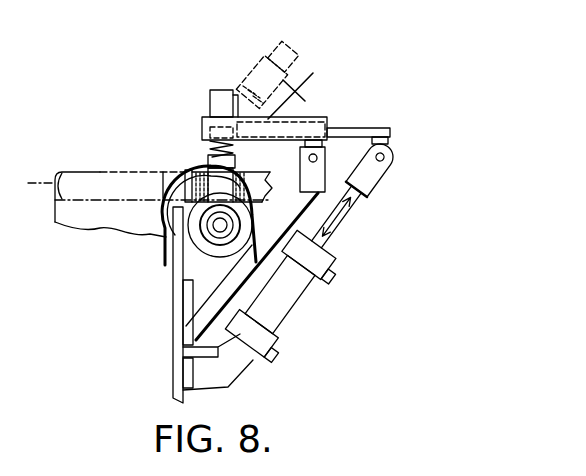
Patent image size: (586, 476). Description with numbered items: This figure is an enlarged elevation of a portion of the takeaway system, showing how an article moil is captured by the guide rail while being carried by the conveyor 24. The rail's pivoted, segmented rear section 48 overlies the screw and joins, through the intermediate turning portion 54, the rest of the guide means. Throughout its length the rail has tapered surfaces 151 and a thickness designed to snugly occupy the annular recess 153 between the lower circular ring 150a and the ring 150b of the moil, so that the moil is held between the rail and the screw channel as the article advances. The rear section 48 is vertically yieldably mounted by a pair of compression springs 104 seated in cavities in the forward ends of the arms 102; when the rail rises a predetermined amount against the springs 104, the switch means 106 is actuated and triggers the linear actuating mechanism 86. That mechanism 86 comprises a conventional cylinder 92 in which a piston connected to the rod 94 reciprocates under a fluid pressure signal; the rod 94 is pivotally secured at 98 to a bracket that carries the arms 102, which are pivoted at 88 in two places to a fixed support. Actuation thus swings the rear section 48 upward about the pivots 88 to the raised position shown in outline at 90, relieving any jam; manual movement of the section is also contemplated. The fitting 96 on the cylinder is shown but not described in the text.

The conveyor 24 is at (58, 166).
The intermediate turning portion 54 is at (153, 211).
The annular recess 153 is at (212, 230).
The compression springs 104 is at (240, 87).
The switch means 106 is at (221, 90).
The pivots 88 is at (334, 157).
The raised position 90 is at (283, 80).
The arms 102 is at (303, 90).
The rear section 48 is at (373, 183).
The lower circular ring 150a is at (178, 232).
The linear actuating mechanism 86 is at (345, 265).
The pivotal connection 98 is at (387, 156).
The rod 94 is at (353, 203).
The tapered surfaces 151 is at (333, 208).
The cylinder 92 is at (294, 305).
The upper circular ring 150b is at (292, 266).
The air fitting 96 is at (267, 353).